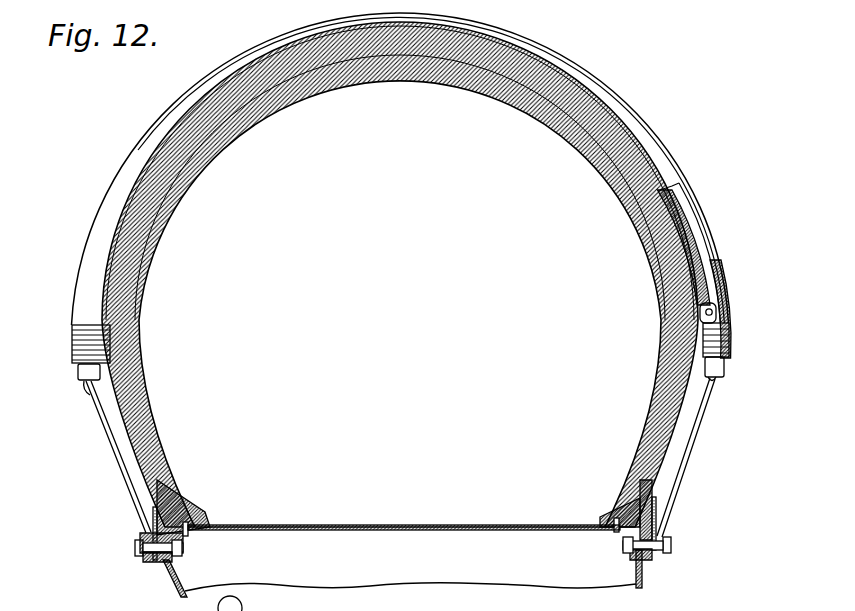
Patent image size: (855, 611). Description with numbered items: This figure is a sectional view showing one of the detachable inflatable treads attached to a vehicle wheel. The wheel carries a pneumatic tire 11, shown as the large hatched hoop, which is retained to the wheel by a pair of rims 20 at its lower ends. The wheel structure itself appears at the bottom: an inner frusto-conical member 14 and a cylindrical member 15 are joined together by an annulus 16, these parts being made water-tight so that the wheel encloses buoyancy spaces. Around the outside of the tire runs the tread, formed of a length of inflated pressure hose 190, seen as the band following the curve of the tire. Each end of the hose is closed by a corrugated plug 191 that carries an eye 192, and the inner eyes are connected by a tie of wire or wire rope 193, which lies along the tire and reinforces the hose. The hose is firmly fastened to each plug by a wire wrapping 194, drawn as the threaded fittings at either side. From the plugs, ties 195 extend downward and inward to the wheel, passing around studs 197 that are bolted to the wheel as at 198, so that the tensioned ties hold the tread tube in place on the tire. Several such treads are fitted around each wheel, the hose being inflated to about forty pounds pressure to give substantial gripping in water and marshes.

The pneumatic tire 11 is at (138, 364).
The inner frusto-conical member 14 is at (168, 580).
The cylindrical member 15 is at (515, 526).
The annulus 16 is at (614, 532).
The rim 20 is at (656, 492).
The inflated pressure hose 190 is at (680, 167).
The corrugated plug 191 is at (720, 317).
The eye 192 is at (722, 292).
The tie of wire or wire rope 193 is at (698, 268).
The wire wrapping 194 is at (731, 336).
The tie 195 is at (696, 438).
The stud 197 is at (662, 559).
The bolt 198 is at (670, 544).